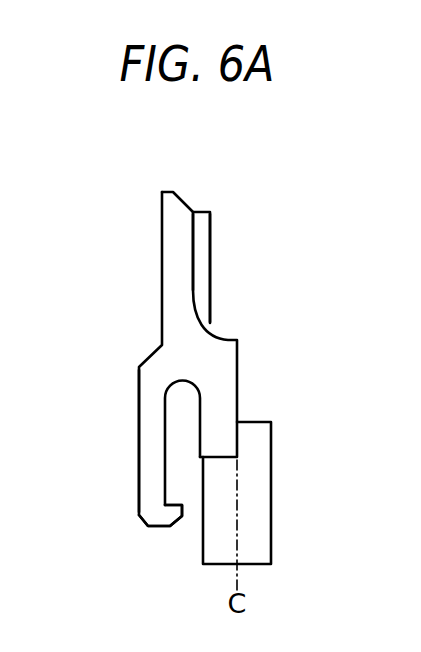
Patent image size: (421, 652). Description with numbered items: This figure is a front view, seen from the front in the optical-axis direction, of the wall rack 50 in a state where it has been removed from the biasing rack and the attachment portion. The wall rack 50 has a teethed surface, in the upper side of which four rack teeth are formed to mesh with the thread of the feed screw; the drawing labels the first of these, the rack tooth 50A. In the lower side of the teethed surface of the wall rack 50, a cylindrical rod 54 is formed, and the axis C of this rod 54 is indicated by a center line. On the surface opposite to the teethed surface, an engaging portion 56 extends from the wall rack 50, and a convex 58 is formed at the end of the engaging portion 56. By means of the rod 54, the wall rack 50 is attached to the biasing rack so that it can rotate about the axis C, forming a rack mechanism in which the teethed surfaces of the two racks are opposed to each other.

The wall rack 50 is at (259, 188).
The rack tooth 50A is at (198, 235).
The engaging portion 56 is at (148, 441).
The convex 58 is at (177, 503).
The cylindrical rod 54 is at (262, 539).